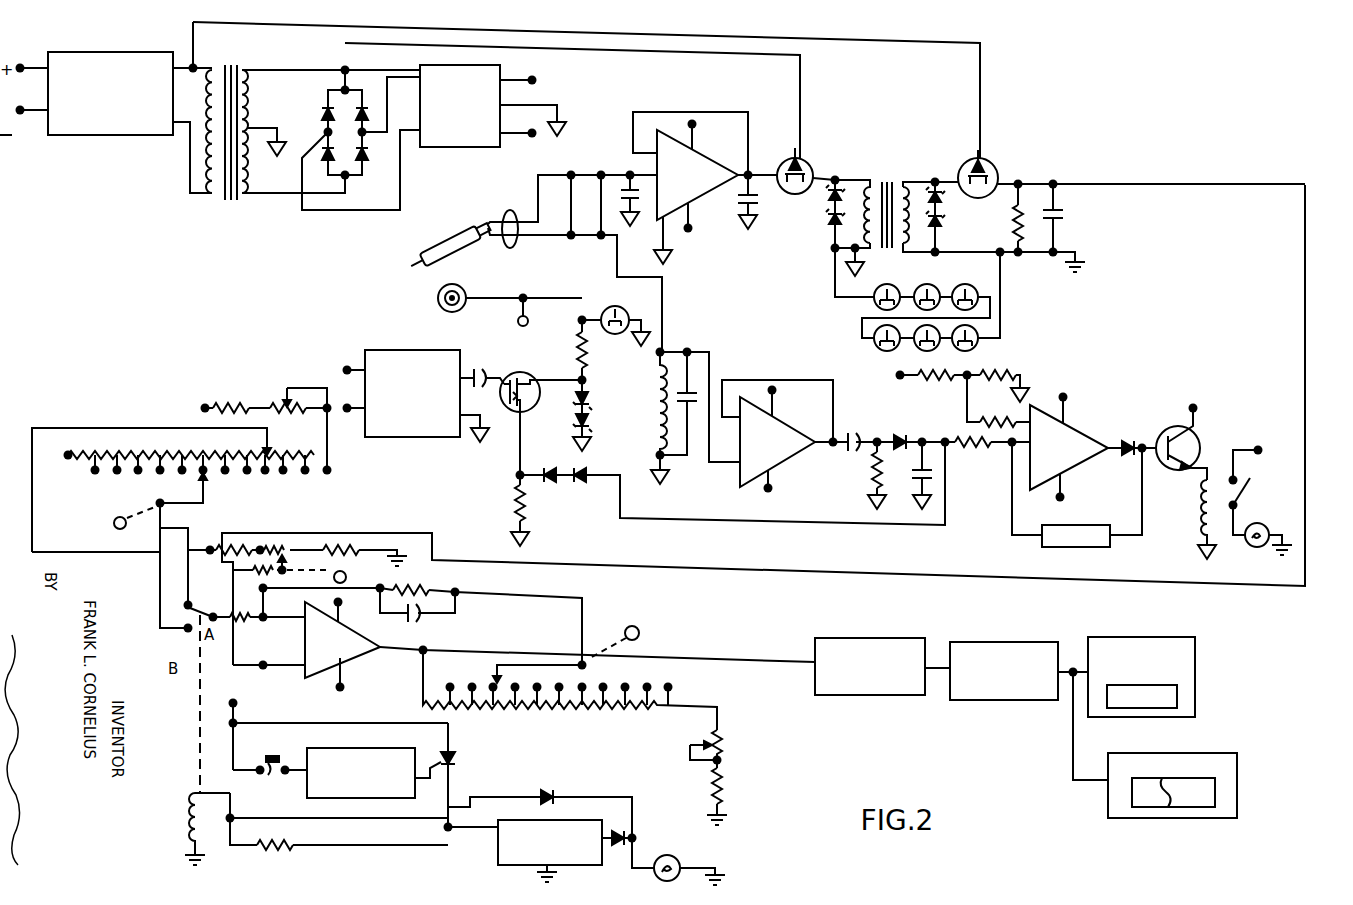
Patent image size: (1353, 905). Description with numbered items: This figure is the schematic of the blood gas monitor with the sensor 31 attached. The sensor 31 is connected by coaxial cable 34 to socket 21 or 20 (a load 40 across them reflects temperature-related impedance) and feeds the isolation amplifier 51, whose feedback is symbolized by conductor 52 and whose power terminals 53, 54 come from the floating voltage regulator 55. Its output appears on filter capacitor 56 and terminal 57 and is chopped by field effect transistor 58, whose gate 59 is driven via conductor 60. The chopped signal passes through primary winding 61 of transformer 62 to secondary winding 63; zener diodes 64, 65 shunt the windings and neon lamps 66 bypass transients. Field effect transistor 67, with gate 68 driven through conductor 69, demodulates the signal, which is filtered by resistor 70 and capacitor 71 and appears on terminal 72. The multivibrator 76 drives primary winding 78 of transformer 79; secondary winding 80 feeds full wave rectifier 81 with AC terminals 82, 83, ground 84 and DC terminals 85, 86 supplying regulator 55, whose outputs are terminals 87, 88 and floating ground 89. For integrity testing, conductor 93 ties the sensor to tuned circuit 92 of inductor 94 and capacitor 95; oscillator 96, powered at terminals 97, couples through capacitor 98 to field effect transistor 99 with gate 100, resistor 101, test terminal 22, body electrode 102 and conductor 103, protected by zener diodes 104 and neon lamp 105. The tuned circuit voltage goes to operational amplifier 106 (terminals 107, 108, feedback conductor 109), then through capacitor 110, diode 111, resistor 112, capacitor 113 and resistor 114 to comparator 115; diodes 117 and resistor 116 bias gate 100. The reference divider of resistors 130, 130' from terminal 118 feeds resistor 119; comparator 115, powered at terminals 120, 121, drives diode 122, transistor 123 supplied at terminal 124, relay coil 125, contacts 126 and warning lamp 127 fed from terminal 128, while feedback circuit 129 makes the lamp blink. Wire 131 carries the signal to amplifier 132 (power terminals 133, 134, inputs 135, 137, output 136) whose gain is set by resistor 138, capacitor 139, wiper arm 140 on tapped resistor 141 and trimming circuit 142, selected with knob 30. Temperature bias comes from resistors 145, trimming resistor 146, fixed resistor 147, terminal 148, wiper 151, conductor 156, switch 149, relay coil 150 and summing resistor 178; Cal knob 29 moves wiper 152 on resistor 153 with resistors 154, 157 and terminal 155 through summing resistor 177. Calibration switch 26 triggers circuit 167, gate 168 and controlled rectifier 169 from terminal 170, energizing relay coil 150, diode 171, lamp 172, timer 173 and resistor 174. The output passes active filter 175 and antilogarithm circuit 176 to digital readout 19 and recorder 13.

The recorder 13 is at (1200, 803).
The digital readout 19 is at (1112, 705).
The socket 20 is at (596, 205).
The socket 21 is at (565, 205).
The sensor test terminal 22 is at (518, 321).
The calibration switch 26 is at (272, 778).
The Cal knob 29 is at (347, 574).
The control knob 30 is at (113, 522).
The sensor 31 is at (450, 234).
The coaxial cable 34 is at (512, 210).
The load 40 is at (628, 174).
The isolation amplifier 51 is at (668, 125).
The conductor 52 is at (712, 112).
The power terminal 53 is at (690, 236).
The power terminal 54 is at (697, 132).
The voltage regulator 55 is at (472, 140).
The filter capacitor 56 is at (752, 218).
The terminal 57 is at (750, 165).
The field effect transistor 58 is at (812, 165).
The gate terminal 59 is at (797, 153).
The conductor 60 is at (802, 95).
The primary winding 61 is at (862, 183).
The transformer 62 is at (896, 175).
The secondary winding 63 is at (908, 190).
The zener diodes 64 is at (830, 212).
The zener diodes 65 is at (943, 215).
The neon lamps 66 is at (857, 312).
The field effect transistor 67 is at (998, 168).
The gate 68 is at (990, 160).
The conductor 69 is at (985, 62).
The resistor 70 is at (1012, 225).
The capacitor 71 is at (1058, 215).
The terminal 72 is at (1060, 183).
The multivibrator 76 is at (75, 137).
The primary winding 78 is at (203, 170).
The transformer 79 is at (231, 213).
The secondary winding 80 is at (250, 188).
The full wave rectifier 81 is at (332, 100).
The terminal 82 is at (350, 66).
The terminal 83 is at (346, 188).
The ground 84 is at (273, 128).
The terminal 85 is at (283, 162).
The terminal 86 is at (366, 138).
The output terminal 87 is at (548, 82).
The output terminal 88 is at (540, 140).
The floating ground midpoint terminal 89 is at (530, 100).
The tuned circuit 92 is at (670, 354).
The conductor 93 is at (668, 300).
The inductor 94 is at (650, 398).
The capacitor 95 is at (692, 440).
The oscillator 96 is at (393, 438).
The power input terminals 97 is at (344, 368).
The capacitor 98 is at (480, 368).
The field effect transistor 99 is at (527, 372).
The gate terminal 100 is at (548, 419).
The resistor 101 is at (588, 350).
The body contacting electrode 102 is at (438, 298).
The conductor 103 is at (491, 298).
The zener diodes 104 is at (590, 404).
The neon lamp 105 is at (616, 312).
The operational amplifier 106 is at (786, 460).
The power terminal 107 is at (778, 386).
The power terminal 108 is at (772, 495).
The conductor 109 is at (747, 378).
The capacitor 110 is at (852, 430).
The diode 111 is at (898, 432).
The resistor 112 is at (872, 476).
The capacitor 113 is at (906, 475).
The current limiting resistor 114 is at (972, 448).
The comparator amplifier 115 is at (1084, 435).
The resistor 116 is at (510, 505).
The diodes 117 is at (566, 487).
The terminal 118 is at (894, 374).
The current limiting resistor 119 is at (996, 394).
The power supply terminal 120 is at (1068, 390).
The power supply terminal 121 is at (1063, 502).
The diode 122 is at (1134, 437).
The transistor 123 is at (1195, 448).
The terminal 124 is at (1198, 405).
The relay coil 125 is at (1202, 517).
The relay switch contacts 126 is at (1246, 497).
The warning lamp 127 is at (1262, 524).
The terminal 128 is at (1262, 447).
The feedback circuit 129 is at (1070, 548).
The resistor 130 is at (940, 393).
The resistor 130' is at (1025, 368).
The wire 131 is at (1303, 334).
The amplifier 132 is at (310, 710).
The power terminal 133 is at (343, 604).
The power terminal 134 is at (346, 684).
The input terminal 135 is at (262, 672).
The output terminal 136 is at (422, 648).
The input terminal 137 is at (265, 622).
The resistor 138 is at (432, 588).
The capacitor 139 is at (418, 620).
The wiper arm 140 is at (536, 662).
The tapped resistor 141 is at (548, 707).
The trimming variable resistor circuit 142 is at (730, 740).
The resistors 145 is at (164, 448).
The trimming resistor 146 is at (287, 388).
The fixed resistor 147 is at (235, 406).
The power terminal 148 is at (227, 411).
The switch 149 is at (180, 610).
The relay coil 150 is at (188, 815).
The wiper 151 is at (198, 504).
The wiper 152 is at (290, 570).
The resistor 153 is at (292, 548).
The fixed resistor 154 is at (350, 548).
The voltage supply terminal 155 is at (187, 540).
The conductor 156 is at (93, 428).
The fixed resistor 157 is at (240, 548).
The time delay and triggering circuit 167 is at (375, 748).
The gate terminal 168 is at (427, 782).
The controlled rectifier 169 is at (462, 765).
The low voltage line terminal 170 is at (238, 705).
The diode 171 is at (560, 793).
The indicator lamp 172 is at (672, 858).
The timer 173 is at (510, 859).
The resistor 174 is at (283, 850).
The active filter 175 is at (858, 695).
The antilogarithm circuit 176 is at (992, 700).
The summing resistor 177 is at (235, 565).
The summing resistor 178 is at (239, 624).